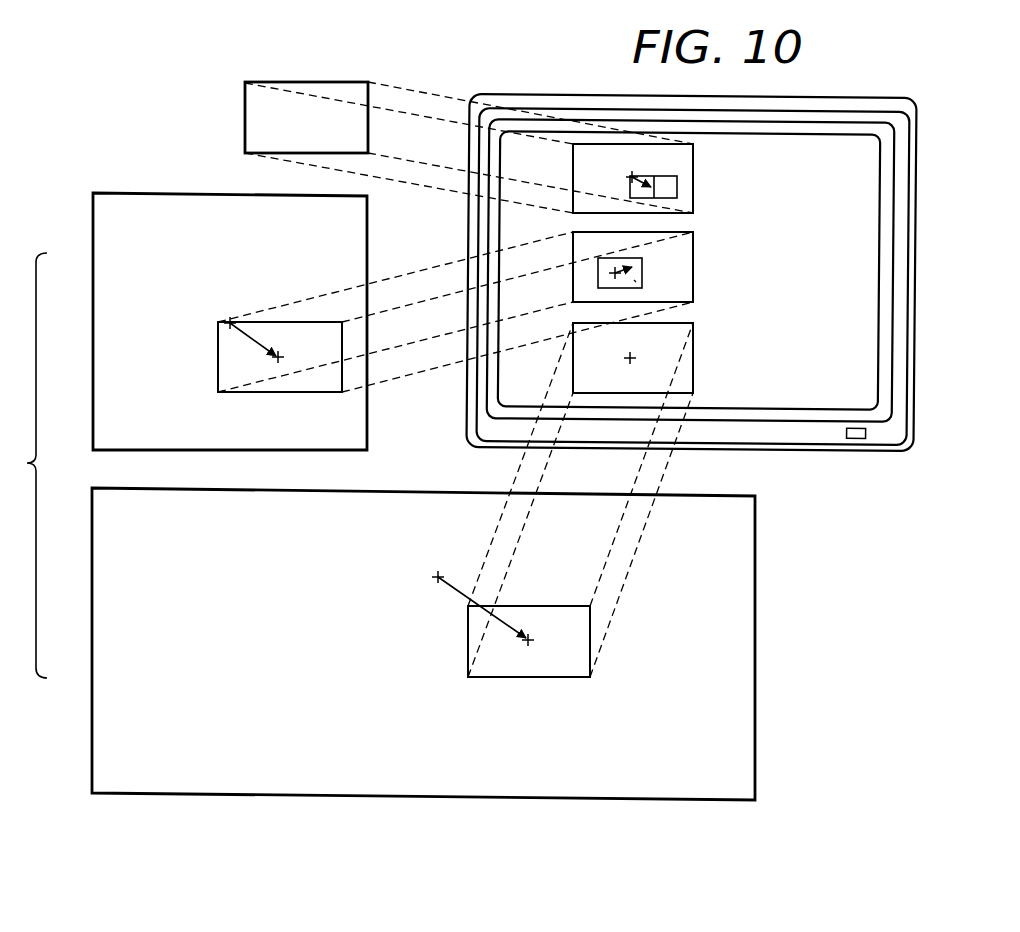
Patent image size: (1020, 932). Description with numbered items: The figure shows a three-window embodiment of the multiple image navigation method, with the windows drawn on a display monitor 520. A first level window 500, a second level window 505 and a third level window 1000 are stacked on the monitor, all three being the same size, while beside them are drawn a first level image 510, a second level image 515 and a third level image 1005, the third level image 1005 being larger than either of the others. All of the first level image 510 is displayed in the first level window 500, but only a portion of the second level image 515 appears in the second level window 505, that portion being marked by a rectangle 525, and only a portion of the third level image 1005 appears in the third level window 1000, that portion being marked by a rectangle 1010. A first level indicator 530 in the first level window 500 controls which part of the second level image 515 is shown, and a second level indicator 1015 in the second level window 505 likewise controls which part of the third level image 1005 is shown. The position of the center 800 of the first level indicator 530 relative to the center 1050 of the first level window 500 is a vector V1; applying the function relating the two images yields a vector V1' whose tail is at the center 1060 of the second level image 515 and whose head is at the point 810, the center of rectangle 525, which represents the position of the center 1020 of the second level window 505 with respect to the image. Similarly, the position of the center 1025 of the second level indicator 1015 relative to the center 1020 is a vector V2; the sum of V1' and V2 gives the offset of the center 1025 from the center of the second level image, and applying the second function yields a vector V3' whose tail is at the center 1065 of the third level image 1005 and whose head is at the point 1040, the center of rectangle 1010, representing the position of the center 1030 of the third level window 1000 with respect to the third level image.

The first level image 510 is at (325, 82).
The second level image 515 is at (138, 193).
The rectangle 525 is at (280, 322).
The center of second level image 1060 is at (228, 326).
The point in image 515 (center of rectangle 525) 810 is at (275, 358).
The vector V1' is at (274, 339).
The third level image 1005 is at (755, 627).
The rectangle 1010 is at (590, 640).
The center of third level image 1065 is at (436, 576).
The point in image 1005 (center of rectangle 1010) 1040 is at (535, 647).
The vector V3' is at (471, 639).
The display monitor 520 is at (798, 435).
The first level window 500 is at (573, 168).
The first level indicator 530 is at (677, 186).
The center of first level indicator 800 is at (662, 188).
The center of first level window 1050 is at (630, 176).
The vector V1 is at (649, 164).
The second level indicator 1015 is at (573, 283).
The second level window 505 is at (693, 232).
The center of second level window 1020 is at (630, 260).
The vector V2 is at (633, 268).
The center of second level indicator 1025 is at (634, 280).
The center of third level window 1030 is at (632, 358).
The third level window 1000 is at (693, 364).